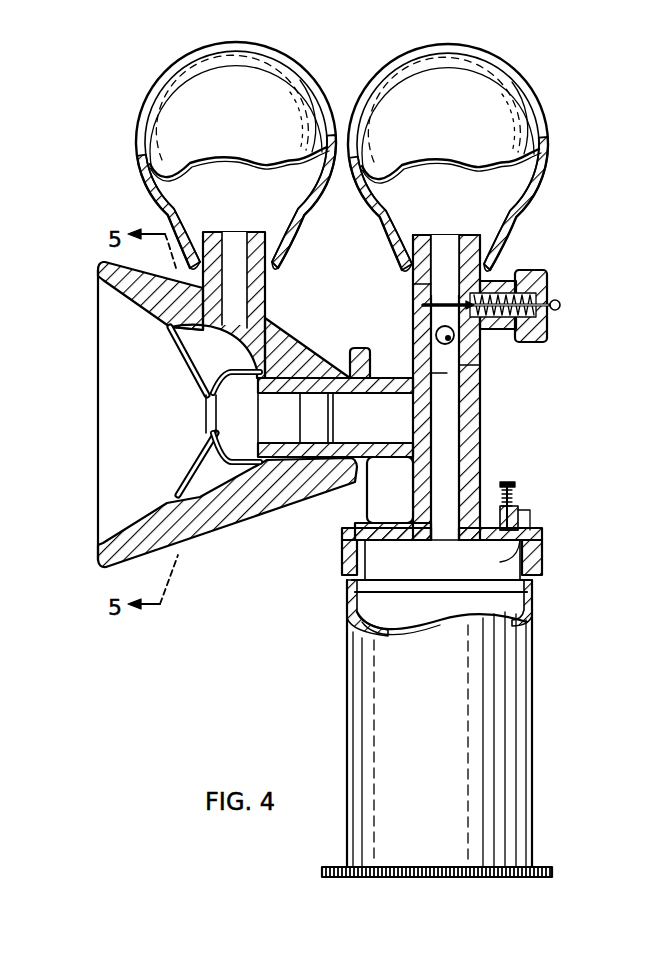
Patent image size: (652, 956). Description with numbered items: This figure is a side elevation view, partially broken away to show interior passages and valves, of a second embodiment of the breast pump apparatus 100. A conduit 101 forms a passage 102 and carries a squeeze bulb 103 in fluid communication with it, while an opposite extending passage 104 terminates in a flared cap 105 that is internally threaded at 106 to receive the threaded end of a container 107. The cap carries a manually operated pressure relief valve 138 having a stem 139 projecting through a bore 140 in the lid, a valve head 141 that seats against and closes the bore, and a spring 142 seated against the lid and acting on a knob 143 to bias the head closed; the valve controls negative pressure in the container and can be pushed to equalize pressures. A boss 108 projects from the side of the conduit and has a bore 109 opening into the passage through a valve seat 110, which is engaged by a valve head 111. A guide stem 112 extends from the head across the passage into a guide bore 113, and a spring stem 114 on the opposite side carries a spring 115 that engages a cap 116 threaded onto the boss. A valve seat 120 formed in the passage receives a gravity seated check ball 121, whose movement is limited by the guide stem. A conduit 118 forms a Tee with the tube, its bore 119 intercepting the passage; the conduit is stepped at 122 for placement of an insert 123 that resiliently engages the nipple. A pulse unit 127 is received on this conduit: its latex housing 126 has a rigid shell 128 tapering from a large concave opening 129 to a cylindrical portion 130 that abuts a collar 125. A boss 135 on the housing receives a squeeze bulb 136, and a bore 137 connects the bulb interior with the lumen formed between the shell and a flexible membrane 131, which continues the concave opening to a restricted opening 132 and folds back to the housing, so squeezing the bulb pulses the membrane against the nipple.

The pump apparatus 100 is at (568, 254).
The conduit 101 is at (485, 438).
The passage 102 is at (462, 410).
The squeeze bulb 103 is at (520, 104).
The opposite extending passage 104 is at (445, 493).
The flared cap 105 is at (342, 556).
The internal threads 106 is at (367, 560).
The container 107 is at (448, 750).
The boss 108 is at (522, 278).
The bore 109 is at (500, 331).
The valve seat 110 is at (482, 366).
The valve head 111 is at (445, 265).
The guide stem 112 is at (423, 306).
The guide bore 113 is at (412, 290).
The spring stem 114 is at (556, 298).
The spring 115 is at (497, 300).
The cap 116 is at (560, 326).
The conduit 118 is at (362, 394).
The bore 119 is at (397, 447).
The valve seat 120 is at (440, 374).
The ball 121 is at (436, 334).
The step 122 is at (312, 445).
The insert 123 is at (280, 440).
The collar 125 is at (352, 490).
The housing 126 is at (246, 540).
The pulse unit 127 is at (148, 206).
The shell 128 is at (272, 318).
The concave opening 129 is at (97, 522).
The cylindrical portion 130 is at (348, 355).
The membrane 131 is at (180, 350).
The restricted opening 132 is at (206, 412).
The boss 135 is at (268, 284).
The squeeze bulb 136 is at (250, 128).
The bore 137 is at (228, 265).
The pressure relief valve 138 is at (538, 470).
The stem 139 is at (525, 538).
The bore 140 is at (520, 518).
The valve head 141 is at (508, 542).
The spring 142 is at (523, 498).
The knob 143 is at (516, 486).